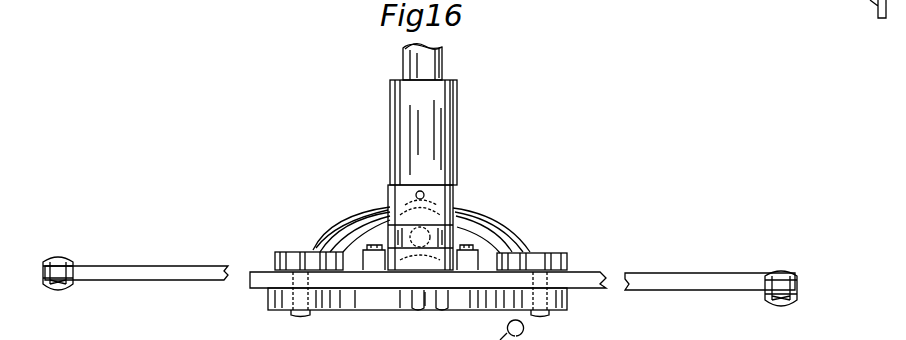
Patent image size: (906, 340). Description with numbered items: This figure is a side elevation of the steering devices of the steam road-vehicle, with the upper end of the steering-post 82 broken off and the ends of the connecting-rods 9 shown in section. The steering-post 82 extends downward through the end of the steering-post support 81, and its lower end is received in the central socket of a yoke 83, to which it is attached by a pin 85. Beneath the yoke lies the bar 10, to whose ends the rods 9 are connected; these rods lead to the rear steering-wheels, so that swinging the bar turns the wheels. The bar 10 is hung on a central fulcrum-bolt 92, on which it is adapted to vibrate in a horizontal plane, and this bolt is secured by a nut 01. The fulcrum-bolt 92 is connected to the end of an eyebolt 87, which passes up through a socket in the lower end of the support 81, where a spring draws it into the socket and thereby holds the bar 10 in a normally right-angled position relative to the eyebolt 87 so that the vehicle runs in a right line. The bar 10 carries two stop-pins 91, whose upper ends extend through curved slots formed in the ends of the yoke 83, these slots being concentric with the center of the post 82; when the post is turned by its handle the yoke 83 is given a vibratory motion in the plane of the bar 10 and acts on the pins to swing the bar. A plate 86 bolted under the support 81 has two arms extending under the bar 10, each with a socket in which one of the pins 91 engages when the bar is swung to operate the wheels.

The steering-post 82 is at (444, 62).
The steering-post support 81 is at (458, 131).
The pin 85 is at (424, 193).
The yoke 83 is at (510, 234).
The nut 01 is at (483, 223).
The stop-pins 91 is at (300, 252).
The eyebolt 87 is at (428, 290).
The central fulcrum-bolt 92 is at (399, 310).
The plate 86 is at (468, 310).
The bar 10 is at (150, 280).
The rods 9 is at (75, 283).